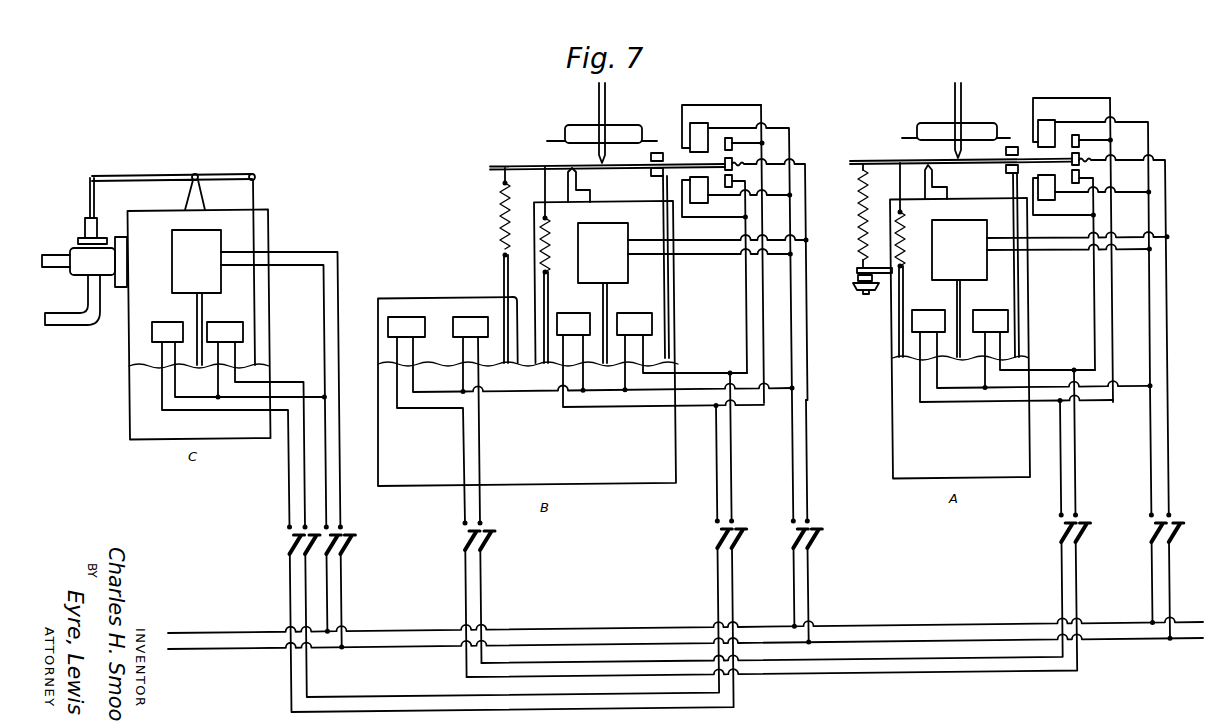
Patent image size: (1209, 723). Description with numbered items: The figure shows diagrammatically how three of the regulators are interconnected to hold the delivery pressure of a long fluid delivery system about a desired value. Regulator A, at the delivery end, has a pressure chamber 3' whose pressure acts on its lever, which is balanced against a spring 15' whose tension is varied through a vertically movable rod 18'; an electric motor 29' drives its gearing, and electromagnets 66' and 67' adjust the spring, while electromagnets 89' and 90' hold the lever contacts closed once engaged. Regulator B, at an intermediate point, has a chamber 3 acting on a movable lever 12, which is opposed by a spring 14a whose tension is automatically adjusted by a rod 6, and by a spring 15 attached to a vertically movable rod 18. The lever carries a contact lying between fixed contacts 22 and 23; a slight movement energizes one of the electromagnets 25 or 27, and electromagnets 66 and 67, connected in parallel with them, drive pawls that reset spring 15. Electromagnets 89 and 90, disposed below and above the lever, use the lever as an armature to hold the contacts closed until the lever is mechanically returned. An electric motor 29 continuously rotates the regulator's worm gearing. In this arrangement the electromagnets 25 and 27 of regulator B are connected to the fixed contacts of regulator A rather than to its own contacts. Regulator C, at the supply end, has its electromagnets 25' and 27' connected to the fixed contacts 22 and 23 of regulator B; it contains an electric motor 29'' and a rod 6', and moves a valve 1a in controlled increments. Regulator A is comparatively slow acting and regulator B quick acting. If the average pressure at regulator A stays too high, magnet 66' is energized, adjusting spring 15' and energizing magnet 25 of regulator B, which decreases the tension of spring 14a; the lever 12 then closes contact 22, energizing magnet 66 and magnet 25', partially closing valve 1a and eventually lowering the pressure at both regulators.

The valve 1a is at (84, 271).
The rod 6' is at (188, 269).
The electric motor 29'' is at (196, 297).
The electromagnet 25' is at (167, 332).
The electromagnet 27' is at (225, 332).
The chamber 3 is at (602, 123).
The movable lever 12 is at (645, 165).
The spring 14a is at (500, 222).
The rod 6 is at (492, 309).
The spring 15 is at (561, 221).
The vertically movable rod 18 is at (558, 317).
The electric motor 29 is at (603, 285).
The electromagnet 25 is at (406, 327).
The electromagnet 27 is at (470, 327).
The electromagnet 66 is at (573, 324).
The electromagnet 67 is at (634, 324).
The electromagnet 90 is at (721, 115).
The fixed contact 23 is at (731, 138).
The fixed contact 22 is at (733, 183).
The electromagnet 89 is at (737, 206).
The chamber 3' is at (956, 120).
The electromagnet 90' is at (1052, 122).
The spring 15' is at (914, 216).
The electric motor 29' is at (959, 279).
The vertically movable rod 18' is at (915, 311).
The electromagnet 89' is at (1092, 205).
The electromagnet 66' is at (928, 321).
The electromagnet 67' is at (990, 321).